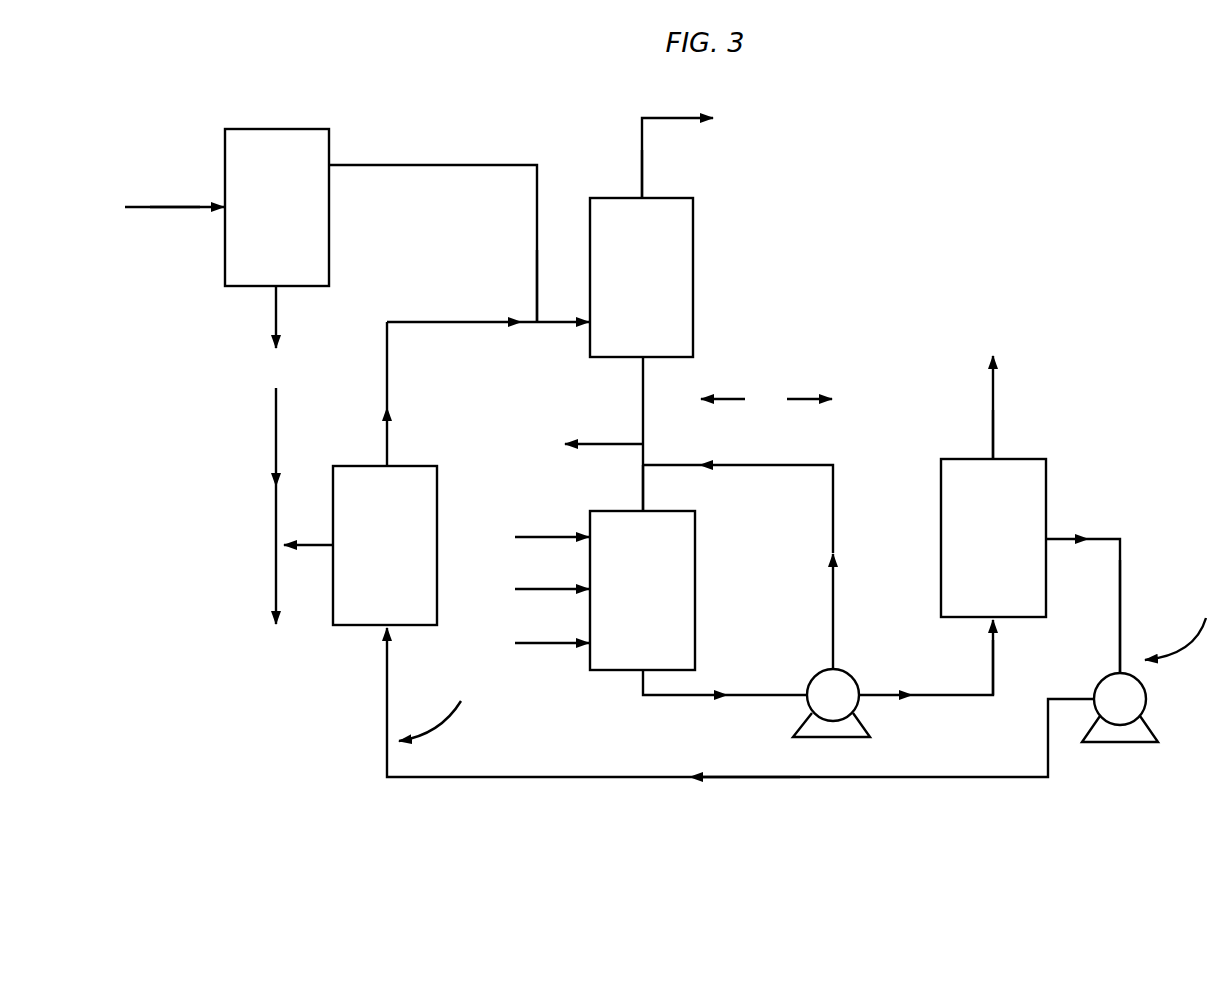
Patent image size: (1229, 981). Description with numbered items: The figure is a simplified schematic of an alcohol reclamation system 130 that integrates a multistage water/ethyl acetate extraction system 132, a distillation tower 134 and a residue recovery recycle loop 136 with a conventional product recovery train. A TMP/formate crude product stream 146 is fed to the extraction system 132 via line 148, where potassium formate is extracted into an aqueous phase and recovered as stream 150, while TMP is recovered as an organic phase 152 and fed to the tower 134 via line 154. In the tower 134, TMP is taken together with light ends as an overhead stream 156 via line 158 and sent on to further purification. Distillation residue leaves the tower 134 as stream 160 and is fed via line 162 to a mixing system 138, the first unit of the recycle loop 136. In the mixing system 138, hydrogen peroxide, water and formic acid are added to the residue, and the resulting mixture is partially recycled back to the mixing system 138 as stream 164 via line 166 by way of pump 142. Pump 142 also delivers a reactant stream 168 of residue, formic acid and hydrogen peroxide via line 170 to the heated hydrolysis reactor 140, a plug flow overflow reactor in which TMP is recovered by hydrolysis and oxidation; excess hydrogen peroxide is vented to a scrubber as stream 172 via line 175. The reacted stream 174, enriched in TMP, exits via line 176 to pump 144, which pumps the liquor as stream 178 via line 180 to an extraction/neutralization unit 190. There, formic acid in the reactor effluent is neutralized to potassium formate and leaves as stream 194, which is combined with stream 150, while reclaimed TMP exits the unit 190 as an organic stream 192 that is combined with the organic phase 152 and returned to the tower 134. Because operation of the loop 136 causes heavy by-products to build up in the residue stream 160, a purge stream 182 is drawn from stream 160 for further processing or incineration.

The system 130 is at (936, 158).
The multistage water/ethyl acetate extraction system 132 is at (277, 207).
The distillation tower 134 is at (641, 277).
The residue recovery recycle loop 136 is at (811, 565).
The mixing system 138 is at (584, 590).
The heated hydrolysis reactor 140 is at (993, 538).
The pump 142 is at (756, 703).
The pump 144 is at (1120, 707).
The TMP/formate crude product stream 146 is at (142, 206).
The line 148 is at (172, 209).
The stream 150 is at (279, 318).
The organic phase 152 is at (530, 164).
The line 154 is at (536, 282).
The overhead stream 156 is at (641, 137).
The line 158 is at (646, 184).
The stream 160 is at (646, 391).
The line 162 is at (641, 488).
The stream 164 is at (771, 464).
The line 166 is at (830, 604).
The reactant stream 168 is at (991, 662).
The line 170 is at (950, 698).
The stream 172 is at (996, 393).
The reacted stream 174 is at (1063, 538).
The line 175 is at (996, 431).
The line 176 is at (1124, 612).
The stream 178 is at (908, 776).
The line 180 is at (579, 776).
The purge stream 182 is at (605, 443).
The extraction/neutralization unit 190 is at (385, 545).
The organic stream 192 is at (389, 388).
The stream 194 is at (305, 548).